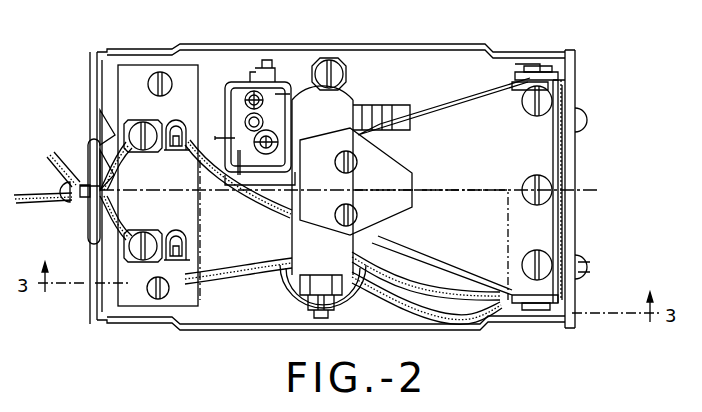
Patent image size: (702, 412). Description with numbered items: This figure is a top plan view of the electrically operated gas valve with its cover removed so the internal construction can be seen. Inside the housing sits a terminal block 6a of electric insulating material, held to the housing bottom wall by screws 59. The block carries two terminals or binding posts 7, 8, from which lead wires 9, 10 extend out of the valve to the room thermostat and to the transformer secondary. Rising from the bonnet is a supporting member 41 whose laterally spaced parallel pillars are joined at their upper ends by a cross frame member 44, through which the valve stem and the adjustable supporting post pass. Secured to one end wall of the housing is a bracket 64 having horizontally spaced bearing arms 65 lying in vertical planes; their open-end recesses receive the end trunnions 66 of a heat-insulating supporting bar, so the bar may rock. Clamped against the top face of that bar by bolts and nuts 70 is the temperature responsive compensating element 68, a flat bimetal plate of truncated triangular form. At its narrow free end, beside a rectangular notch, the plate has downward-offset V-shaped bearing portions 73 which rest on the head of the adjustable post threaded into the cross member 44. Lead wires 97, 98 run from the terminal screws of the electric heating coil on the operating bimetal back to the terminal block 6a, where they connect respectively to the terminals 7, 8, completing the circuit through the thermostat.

The terminal block 6a is at (148, 300).
The terminal 7 is at (140, 122).
The terminal 8 is at (140, 264).
The lead wire 9 is at (55, 216).
The lead wire 10 is at (60, 165).
The supporting member 41 is at (358, 293).
The cross frame member 44 is at (332, 267).
The screws 59 is at (162, 78).
The bracket 64 is at (562, 165).
The bearing arms 65 is at (515, 68).
The end trunnions 66 is at (548, 68).
The temperature responsive compensating element 68 is at (474, 225).
The bolts and nuts 70 is at (532, 178).
The bearing portion 73 is at (385, 232).
The lead wire 97 is at (243, 280).
The lead wire 98 is at (250, 224).